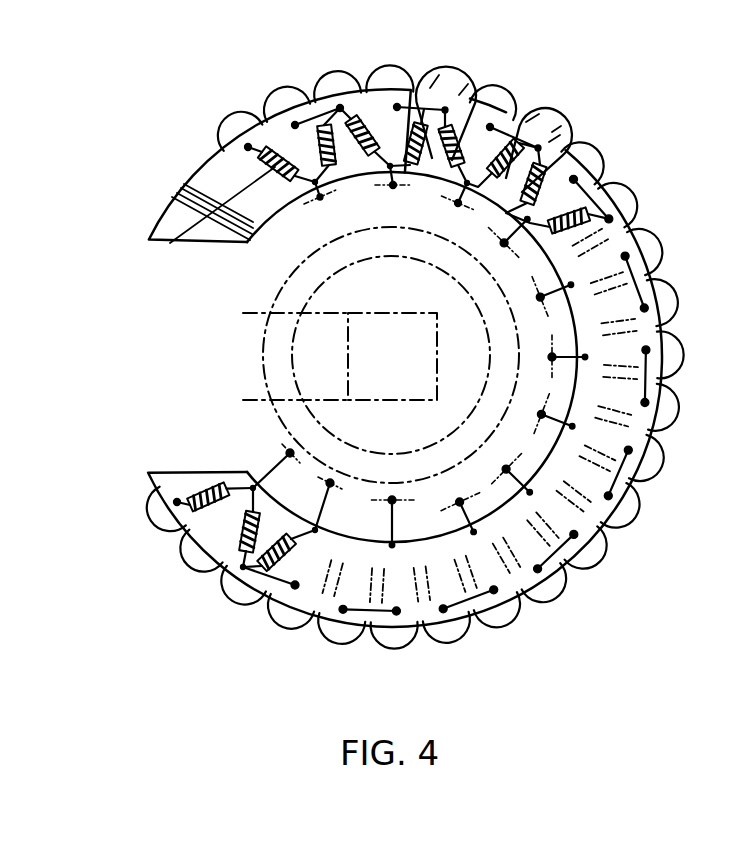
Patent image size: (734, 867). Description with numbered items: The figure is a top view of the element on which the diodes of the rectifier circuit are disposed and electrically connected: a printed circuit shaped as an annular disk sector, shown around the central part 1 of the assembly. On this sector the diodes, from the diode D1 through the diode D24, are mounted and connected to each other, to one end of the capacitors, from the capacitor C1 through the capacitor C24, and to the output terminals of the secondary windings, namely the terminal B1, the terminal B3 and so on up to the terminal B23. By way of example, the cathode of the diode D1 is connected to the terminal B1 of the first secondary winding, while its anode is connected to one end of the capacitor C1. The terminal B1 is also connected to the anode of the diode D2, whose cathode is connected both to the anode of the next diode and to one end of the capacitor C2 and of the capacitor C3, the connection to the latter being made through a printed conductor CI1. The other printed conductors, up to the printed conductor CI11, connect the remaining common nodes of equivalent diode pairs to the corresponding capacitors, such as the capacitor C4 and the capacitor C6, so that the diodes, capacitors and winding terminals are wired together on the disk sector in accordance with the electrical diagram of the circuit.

The rotor shaft 1 is at (322, 271).
The printed conductor CI11 is at (305, 112).
The capacitor C24 is at (232, 124).
The diode D24 is at (170, 244).
The output terminal B23 is at (318, 189).
The diode D1 is at (212, 486).
The output terminal B1 is at (287, 453).
The output terminal B3 is at (332, 482).
The diode D2 is at (238, 530).
The capacitor C1 is at (172, 528).
The capacitor C2 is at (244, 590).
The printed conductor CI1 is at (268, 598).
The capacitor C3 is at (280, 630).
The capacitor C4 is at (352, 636).
The capacitor C6 is at (446, 644).